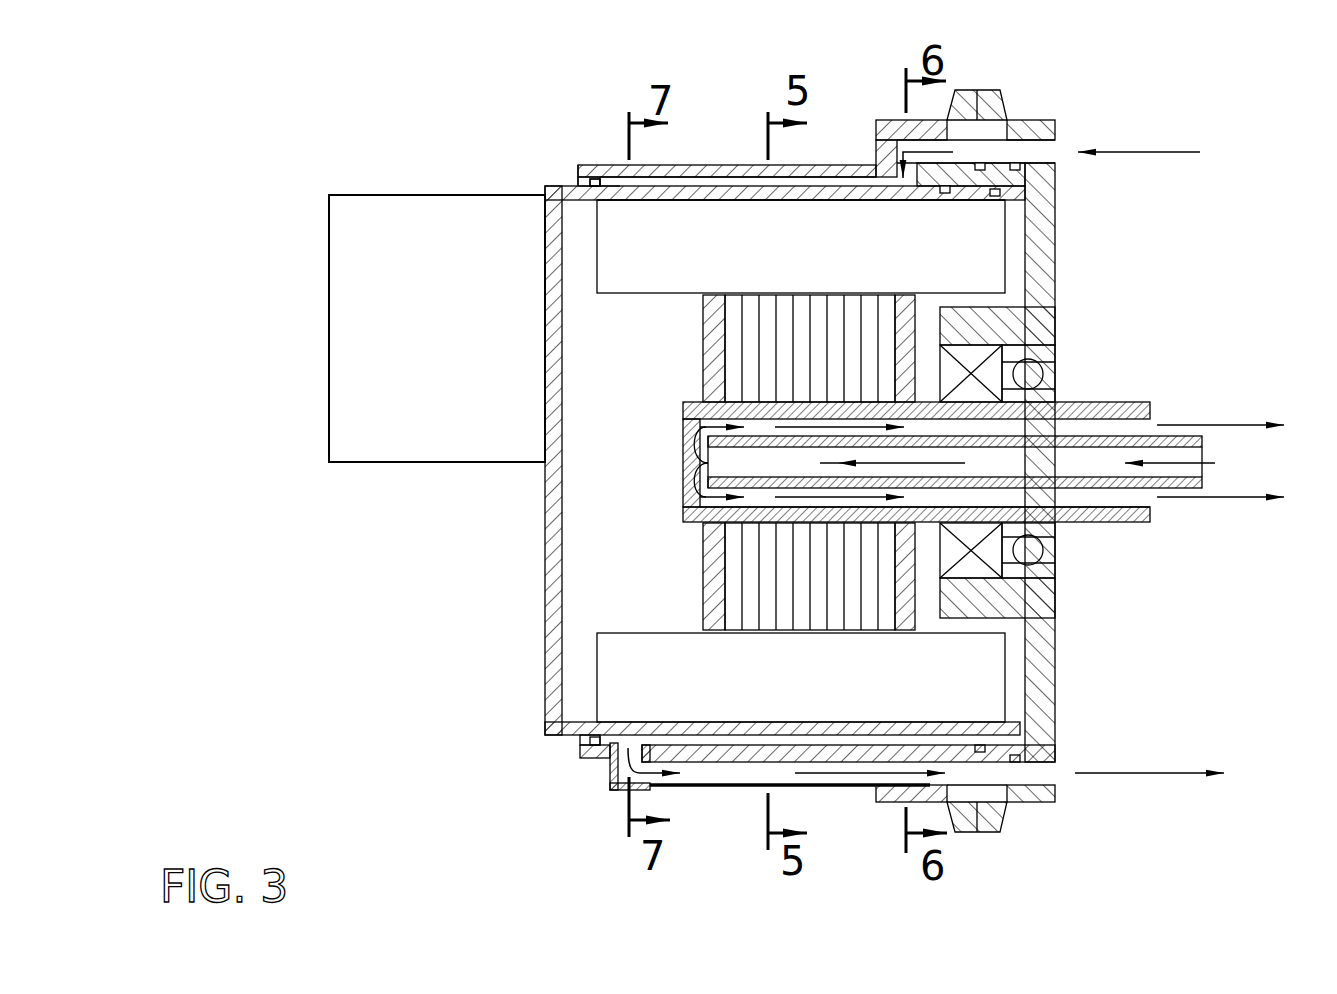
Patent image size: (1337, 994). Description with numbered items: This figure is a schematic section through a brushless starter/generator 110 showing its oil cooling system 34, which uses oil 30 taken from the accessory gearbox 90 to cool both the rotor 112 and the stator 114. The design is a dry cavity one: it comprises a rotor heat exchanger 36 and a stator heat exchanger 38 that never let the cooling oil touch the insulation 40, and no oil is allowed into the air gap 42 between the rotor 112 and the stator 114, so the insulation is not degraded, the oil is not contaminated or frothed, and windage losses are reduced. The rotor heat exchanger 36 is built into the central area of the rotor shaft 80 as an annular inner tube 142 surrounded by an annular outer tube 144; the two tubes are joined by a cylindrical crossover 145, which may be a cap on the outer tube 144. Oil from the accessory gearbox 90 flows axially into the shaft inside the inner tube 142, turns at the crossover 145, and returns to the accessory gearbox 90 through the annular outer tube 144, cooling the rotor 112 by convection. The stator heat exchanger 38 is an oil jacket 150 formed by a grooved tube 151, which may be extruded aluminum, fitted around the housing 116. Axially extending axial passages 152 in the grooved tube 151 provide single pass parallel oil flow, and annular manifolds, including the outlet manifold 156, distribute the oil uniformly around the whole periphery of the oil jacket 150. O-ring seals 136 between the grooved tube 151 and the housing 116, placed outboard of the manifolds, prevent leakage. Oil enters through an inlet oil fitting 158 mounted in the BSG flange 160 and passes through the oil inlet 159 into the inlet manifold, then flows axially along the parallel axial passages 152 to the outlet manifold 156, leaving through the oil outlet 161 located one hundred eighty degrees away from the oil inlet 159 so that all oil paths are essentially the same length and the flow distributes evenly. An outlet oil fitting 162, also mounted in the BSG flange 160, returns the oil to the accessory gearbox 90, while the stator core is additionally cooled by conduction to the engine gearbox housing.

The oil 30 is at (1157, 152).
The oil cooling system 34 is at (1202, 108).
The rotor heat exchanger 36 is at (735, 523).
The stator heat exchanger 38 is at (750, 163).
The insulation 40 is at (670, 208).
The air gap 42 is at (820, 295).
The rotor shaft 80 is at (1130, 402).
The accessory gearbox 90 is at (1304, 334).
The motor assembly 110 is at (486, 755).
The rotor 112 is at (771, 444).
The stator 114 is at (808, 251).
The housing 116 is at (866, 202).
The O-ring seals 136 is at (598, 190).
The inner tube 142 is at (1090, 436).
The outer tube 144 is at (1100, 515).
The cylindrical crossover 145 is at (697, 428).
The oil jacket 150 is at (788, 182).
The grooved tube 151 is at (585, 165).
The axial passages 152 is at (625, 186).
The outlet manifold 156 is at (637, 745).
The inlet oil fitting 158 is at (1040, 150).
The oil inlet 159 is at (898, 145).
The BSG flange 160 is at (985, 95).
The oil outlet 161 is at (613, 772).
The outlet oil fitting 162 is at (1005, 775).